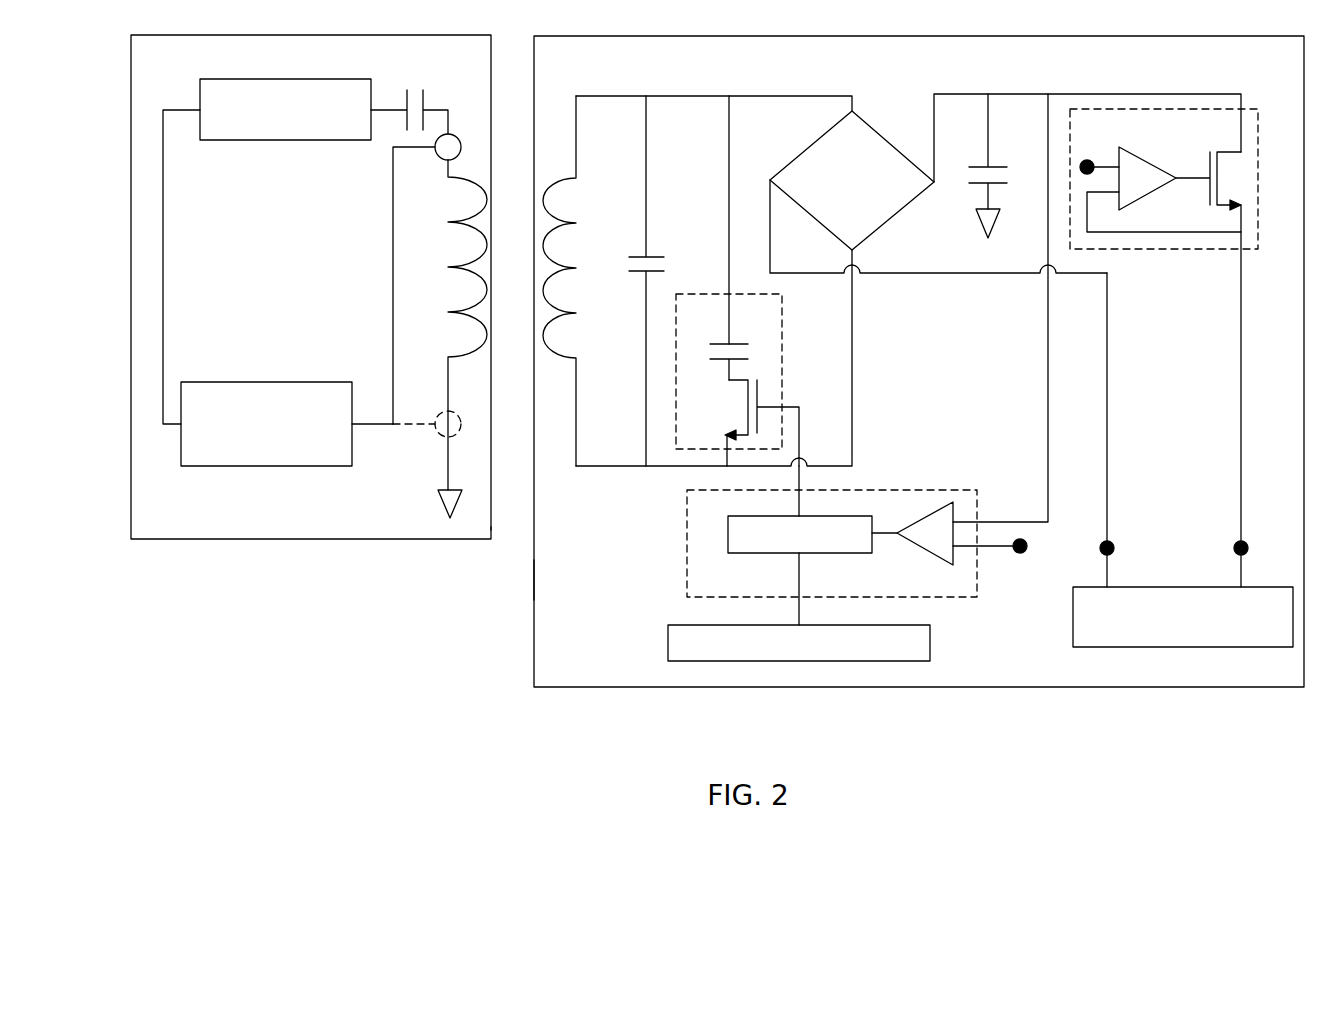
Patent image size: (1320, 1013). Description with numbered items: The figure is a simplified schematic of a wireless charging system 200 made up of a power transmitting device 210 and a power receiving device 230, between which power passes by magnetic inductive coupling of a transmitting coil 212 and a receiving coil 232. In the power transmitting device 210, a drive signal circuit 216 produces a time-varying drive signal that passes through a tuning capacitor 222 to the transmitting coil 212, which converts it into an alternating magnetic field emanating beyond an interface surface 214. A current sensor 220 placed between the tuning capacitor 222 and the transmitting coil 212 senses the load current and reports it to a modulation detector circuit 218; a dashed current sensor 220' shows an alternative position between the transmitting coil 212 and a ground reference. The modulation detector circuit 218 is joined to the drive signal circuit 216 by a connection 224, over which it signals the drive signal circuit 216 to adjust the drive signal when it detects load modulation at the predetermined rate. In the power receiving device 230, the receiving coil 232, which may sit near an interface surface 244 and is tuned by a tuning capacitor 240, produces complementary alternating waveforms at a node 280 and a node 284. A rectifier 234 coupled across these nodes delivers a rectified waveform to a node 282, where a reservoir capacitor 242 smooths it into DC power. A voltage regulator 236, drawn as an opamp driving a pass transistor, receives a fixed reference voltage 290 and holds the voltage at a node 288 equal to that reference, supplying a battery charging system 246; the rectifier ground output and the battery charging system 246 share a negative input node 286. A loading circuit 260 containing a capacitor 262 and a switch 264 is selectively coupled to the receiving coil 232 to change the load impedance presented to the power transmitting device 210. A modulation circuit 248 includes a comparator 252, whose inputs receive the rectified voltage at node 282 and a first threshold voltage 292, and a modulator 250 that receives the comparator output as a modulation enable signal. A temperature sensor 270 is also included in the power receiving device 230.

The wireless charging system 200 is at (278, 662).
The power transmitting device 210 is at (310, 542).
The transmitting coil 212 is at (460, 224).
The interface surface 214 is at (491, 527).
The drive signal circuit 216 is at (330, 78).
The modulation detector circuit 218 is at (258, 381).
The current sensor 220 is at (427, 279).
The dashed current sensor 220' is at (427, 449).
The tuning capacitor 222 is at (425, 90).
The connection 224 is at (163, 266).
The power receiving device 230 is at (592, 690).
The receiving coil 232 is at (567, 352).
The rectifier 234 is at (895, 212).
The voltage regulator 236 is at (1140, 250).
The tuning capacitor 240 is at (637, 256).
The reservoir capacitor 242 is at (980, 166).
The interface surface 244 is at (535, 577).
The battery charging system 246 is at (1073, 612).
The modulation circuit 248 is at (903, 488).
The modulator 250 is at (772, 555).
The comparator 252 is at (928, 553).
The loading circuit 260 is at (784, 333).
The capacitor 262 is at (737, 343).
The switch 264 is at (746, 412).
The temperature sensor 270 is at (935, 645).
The node 280 is at (760, 94).
The node 282 is at (1080, 92).
The node 284 is at (636, 467).
The negative input node 286 is at (1115, 543).
The node 288 is at (1235, 543).
The fixed reference voltage 290 is at (1095, 160).
The first threshold voltage 292 is at (1027, 553).